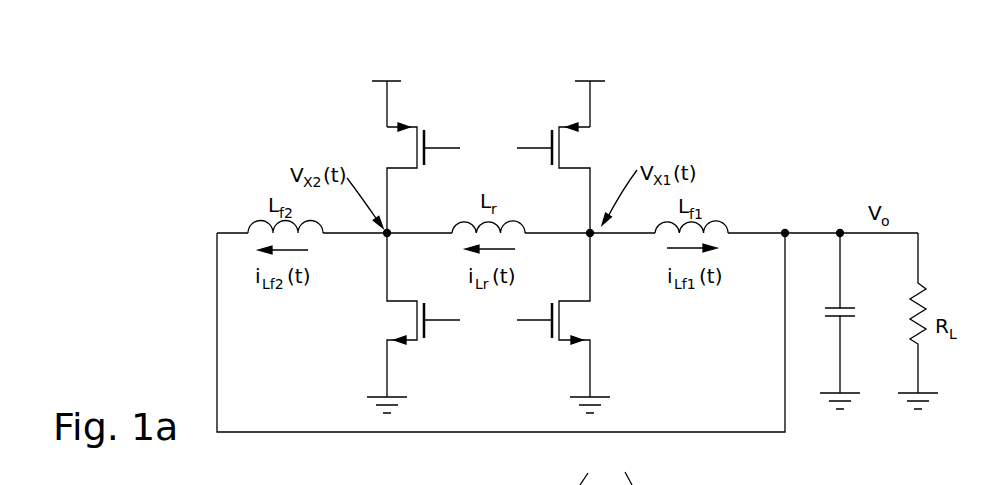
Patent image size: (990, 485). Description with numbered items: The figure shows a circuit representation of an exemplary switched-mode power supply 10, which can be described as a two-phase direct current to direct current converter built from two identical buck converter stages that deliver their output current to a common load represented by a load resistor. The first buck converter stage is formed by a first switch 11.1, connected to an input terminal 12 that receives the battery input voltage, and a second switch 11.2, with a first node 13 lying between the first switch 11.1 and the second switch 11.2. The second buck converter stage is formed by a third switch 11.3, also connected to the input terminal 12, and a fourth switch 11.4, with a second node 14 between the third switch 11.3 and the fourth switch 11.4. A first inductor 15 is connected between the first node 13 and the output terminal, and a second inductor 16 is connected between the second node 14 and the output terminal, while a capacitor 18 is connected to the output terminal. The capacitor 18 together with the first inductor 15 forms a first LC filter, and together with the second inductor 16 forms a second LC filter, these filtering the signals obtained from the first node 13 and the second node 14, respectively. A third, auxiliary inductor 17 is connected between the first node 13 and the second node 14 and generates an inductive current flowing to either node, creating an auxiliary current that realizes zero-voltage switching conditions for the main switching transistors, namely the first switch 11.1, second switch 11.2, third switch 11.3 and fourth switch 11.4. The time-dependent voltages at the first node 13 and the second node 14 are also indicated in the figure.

The switched-mode power supply 10 is at (822, 103).
The first switch 11.1 is at (602, 145).
The second switch 11.2 is at (602, 327).
The third switch 11.3 is at (376, 146).
The fourth switch 11.4 is at (377, 327).
The input terminal 12 is at (605, 81).
The first node 13 is at (592, 237).
The second node 14 is at (386, 237).
The first inductor 15 is at (728, 224).
The second inductor 16 is at (250, 225).
The third inductor 17 is at (510, 222).
The capacitor 18 is at (850, 308).